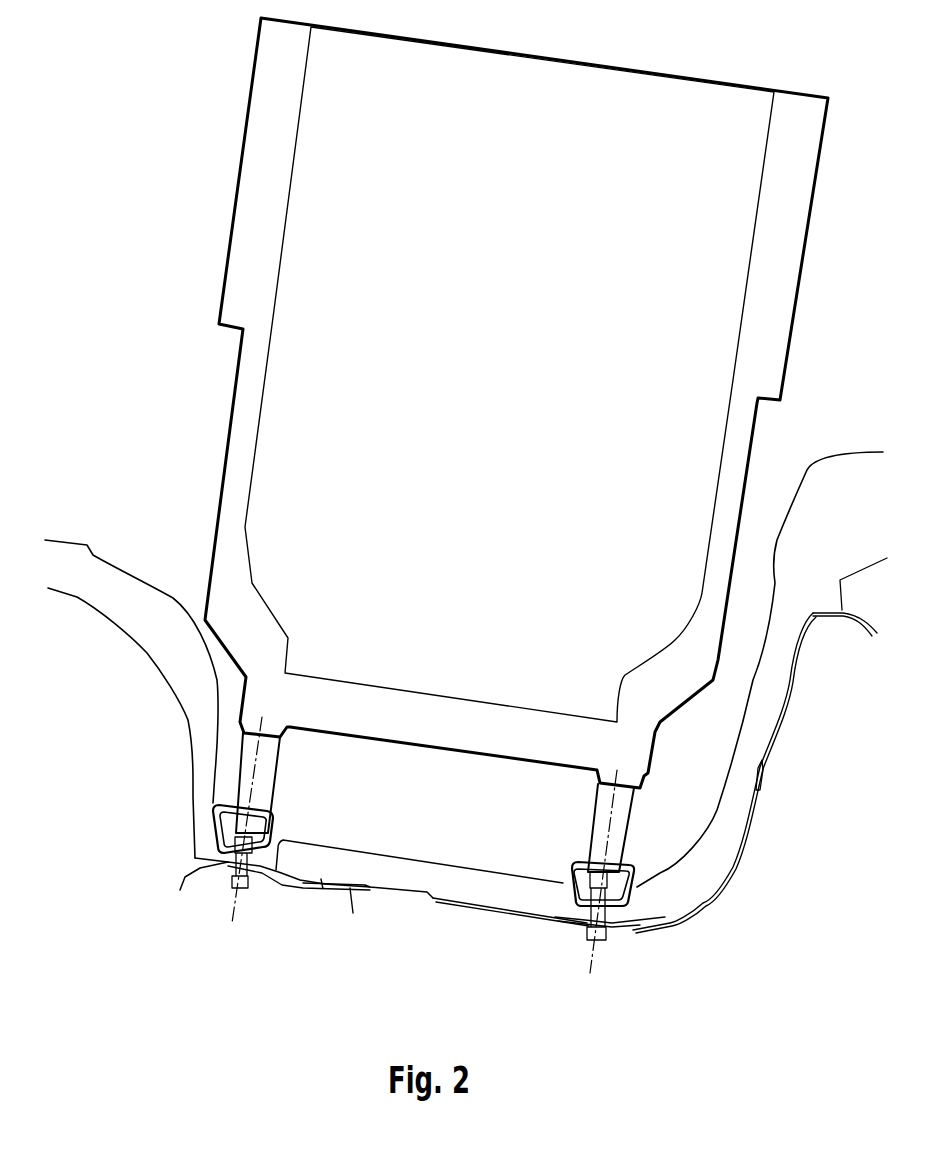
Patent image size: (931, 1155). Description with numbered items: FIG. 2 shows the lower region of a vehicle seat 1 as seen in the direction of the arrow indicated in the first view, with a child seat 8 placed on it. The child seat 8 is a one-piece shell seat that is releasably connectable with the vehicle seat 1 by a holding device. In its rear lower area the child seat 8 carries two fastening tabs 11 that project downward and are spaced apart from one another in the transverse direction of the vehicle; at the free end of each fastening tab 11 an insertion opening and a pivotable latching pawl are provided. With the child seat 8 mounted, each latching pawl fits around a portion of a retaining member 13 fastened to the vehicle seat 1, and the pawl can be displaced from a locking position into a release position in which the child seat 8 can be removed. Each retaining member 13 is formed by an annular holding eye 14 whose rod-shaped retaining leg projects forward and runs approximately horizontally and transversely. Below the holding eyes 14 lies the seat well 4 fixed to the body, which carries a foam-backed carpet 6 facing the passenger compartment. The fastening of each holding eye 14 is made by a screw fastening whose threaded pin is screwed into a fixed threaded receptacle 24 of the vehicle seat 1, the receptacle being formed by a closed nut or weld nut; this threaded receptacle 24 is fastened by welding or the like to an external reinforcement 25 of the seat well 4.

The vehicle seat 1 is at (398, 826).
The seat well 4 is at (487, 907).
The foam-backed carpet 6 is at (408, 877).
The child seat 8 is at (548, 52).
The fastening tab 11 is at (290, 759).
The retaining member 13 is at (207, 794).
The annular holding eye 14 is at (273, 815).
The threaded receptacle 24 is at (230, 885).
The external reinforcement 25 is at (285, 890).